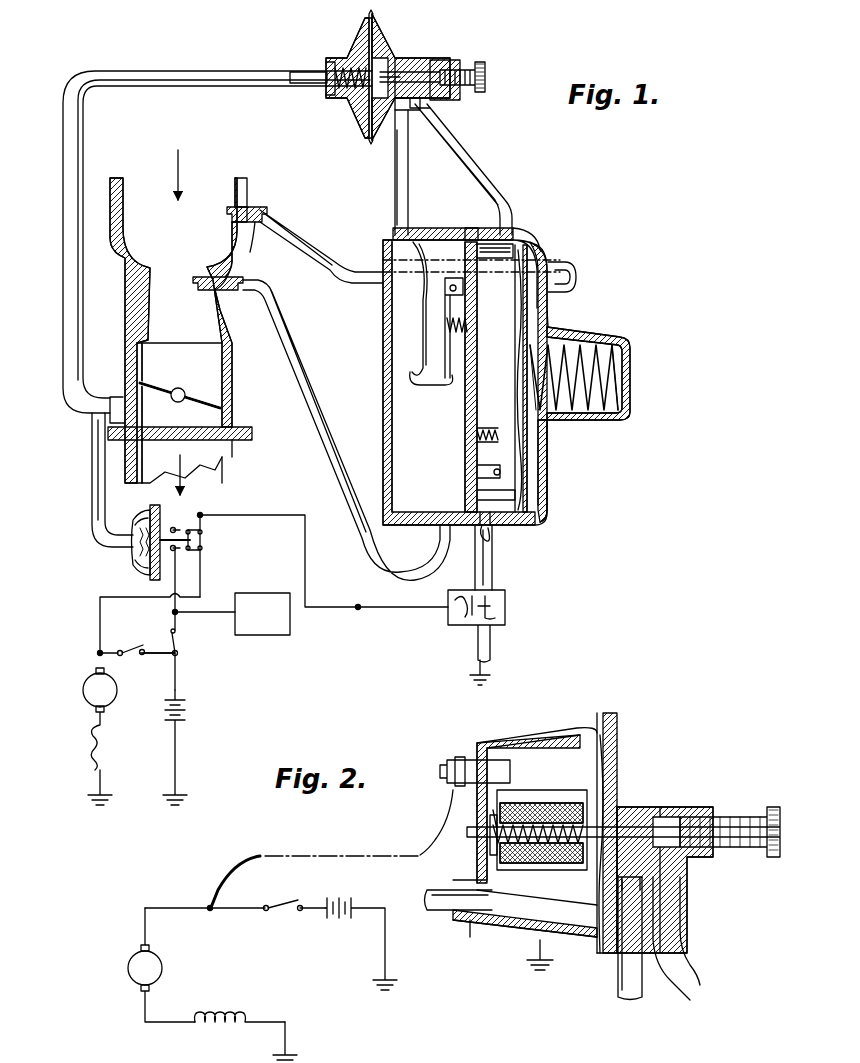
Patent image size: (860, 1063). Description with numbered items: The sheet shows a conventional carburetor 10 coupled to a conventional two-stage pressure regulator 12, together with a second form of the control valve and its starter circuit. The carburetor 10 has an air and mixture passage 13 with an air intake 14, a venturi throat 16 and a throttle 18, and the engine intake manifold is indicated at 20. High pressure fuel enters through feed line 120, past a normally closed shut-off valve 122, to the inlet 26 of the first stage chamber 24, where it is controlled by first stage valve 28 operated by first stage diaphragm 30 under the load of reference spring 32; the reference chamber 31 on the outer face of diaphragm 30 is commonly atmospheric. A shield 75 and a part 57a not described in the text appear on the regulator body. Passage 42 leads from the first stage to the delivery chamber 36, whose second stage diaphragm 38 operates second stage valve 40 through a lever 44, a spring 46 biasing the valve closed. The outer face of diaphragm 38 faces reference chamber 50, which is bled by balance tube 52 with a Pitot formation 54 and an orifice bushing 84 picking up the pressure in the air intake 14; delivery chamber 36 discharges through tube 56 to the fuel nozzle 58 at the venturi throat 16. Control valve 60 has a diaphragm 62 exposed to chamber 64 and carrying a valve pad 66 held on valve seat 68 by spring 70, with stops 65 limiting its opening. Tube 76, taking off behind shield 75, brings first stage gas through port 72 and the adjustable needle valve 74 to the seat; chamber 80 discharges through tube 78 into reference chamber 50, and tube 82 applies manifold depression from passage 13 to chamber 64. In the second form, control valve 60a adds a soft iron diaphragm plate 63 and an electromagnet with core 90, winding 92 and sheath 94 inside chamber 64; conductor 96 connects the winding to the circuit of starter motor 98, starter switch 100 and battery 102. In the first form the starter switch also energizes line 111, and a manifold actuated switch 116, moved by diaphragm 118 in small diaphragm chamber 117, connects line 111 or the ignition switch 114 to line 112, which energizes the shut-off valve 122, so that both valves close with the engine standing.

In FIG. 1, the carburetor 10 is at (125, 318).
In FIG. 1, the two-stage pressure regulator 12 is at (545, 218).
In FIG. 1, the air and mixture passage 13 is at (145, 365).
In FIG. 1, the air intake 14 is at (172, 177).
In FIG. 1, the venturi throat 16 is at (179, 265).
In FIG. 1, the throttle 18 is at (195, 385).
In FIG. 1, the engine intake manifold 20 is at (232, 460).
In FIG. 1, the first stage chamber 24 is at (516, 352).
In FIG. 1, the high pressure inlet 26 is at (492, 538).
In FIG. 1, the first stage valve 28 is at (505, 498).
In FIG. 1, the first stage diaphragm 30 is at (540, 320).
In FIG. 1, the reference chamber 31 is at (545, 448).
In FIG. 1, the reference spring 32 is at (618, 340).
In FIG. 1, the delivery chamber 36 is at (467, 437).
In FIG. 1, the second stage diaphragm 38 is at (445, 325).
In FIG. 1, the second stage valve 40 is at (457, 240).
In FIG. 1, the passage 42 is at (485, 262).
In FIG. 1, the lever 44 is at (445, 352).
In FIG. 1, the spring 46 is at (468, 320).
In FIG. 1, the reference chamber 50 is at (395, 380).
In FIG. 1, the balance tube 52 is at (345, 222).
In FIG. 1, the Pitot formation 54 is at (240, 207).
In FIG. 1, the tube 56 is at (320, 428).
In FIG. 1, the mounting lug 57a is at (576, 272).
In FIG. 1, the fuel nozzle 58 is at (208, 290).
In FIG. 1, the control valve 60 is at (387, 89).
In FIG. 2, the control valve 60a is at (496, 841).
In FIG. 1, the diaphragm 62 is at (372, 28).
In FIG. 2, the diaphragm 62 is at (605, 760).
In FIG. 2, the diaphragm plate 63 is at (612, 782).
In FIG. 1, the diaphragm chamber 64 is at (363, 42).
In FIG. 2, the diaphragm chamber 64 is at (515, 905).
In FIG. 1, the stops 65 is at (340, 60).
In FIG. 1, the valve pad 66 is at (392, 58).
In FIG. 2, the valve pad 66 is at (613, 802).
In FIG. 1, the valve seat 68 is at (400, 77).
In FIG. 2, the valve seat 68 is at (640, 825).
In FIG. 1, the spring 70 is at (340, 95).
In FIG. 2, the spring 70 is at (548, 865).
In FIG. 1, the port 72 is at (418, 105).
In FIG. 1, the needle valve 74 is at (450, 100).
In FIG. 2, the needle valve 74 is at (665, 827).
In FIG. 1, the shield 75 is at (540, 248).
In FIG. 1, the tube 76 is at (470, 166).
In FIG. 2, the tube 76 is at (700, 985).
In FIG. 1, the tube 78 is at (408, 170).
In FIG. 2, the tube 78 is at (618, 988).
In FIG. 1, the chamber 80 is at (398, 112).
In FIG. 2, the chamber 80 is at (632, 895).
In FIG. 1, the tube 82 is at (208, 70).
In FIG. 2, the tube 82 is at (445, 905).
In FIG. 1, the orifice bushing 84 is at (257, 242).
In FIG. 2, the soft iron core 90 is at (540, 790).
In FIG. 2, the winding 92 is at (500, 803).
In FIG. 2, the outer soft iron sheath 94 is at (565, 790).
In FIG. 2, the conductor 96 is at (356, 855).
In FIG. 1, the starter motor 98 is at (84, 692).
In FIG. 2, the starter motor 98 is at (175, 968).
In FIG. 1, the starter switch 100 is at (146, 632).
In FIG. 2, the starter switch 100 is at (282, 918).
In FIG. 2, the battery 102 is at (330, 918).
In FIG. 1, the line 111 is at (200, 576).
In FIG. 1, the line 112 is at (178, 616).
In FIG. 1, the ignition switch 114 is at (180, 652).
In FIG. 1, the manifold actuated switch 116 is at (205, 542).
In FIG. 1, the diaphragm chamber 117 is at (138, 552).
In FIG. 1, the diaphragm 118 is at (138, 520).
In FIG. 1, the high pressure feed line 120 is at (492, 572).
In FIG. 1, the shut-off valve 122 is at (508, 607).